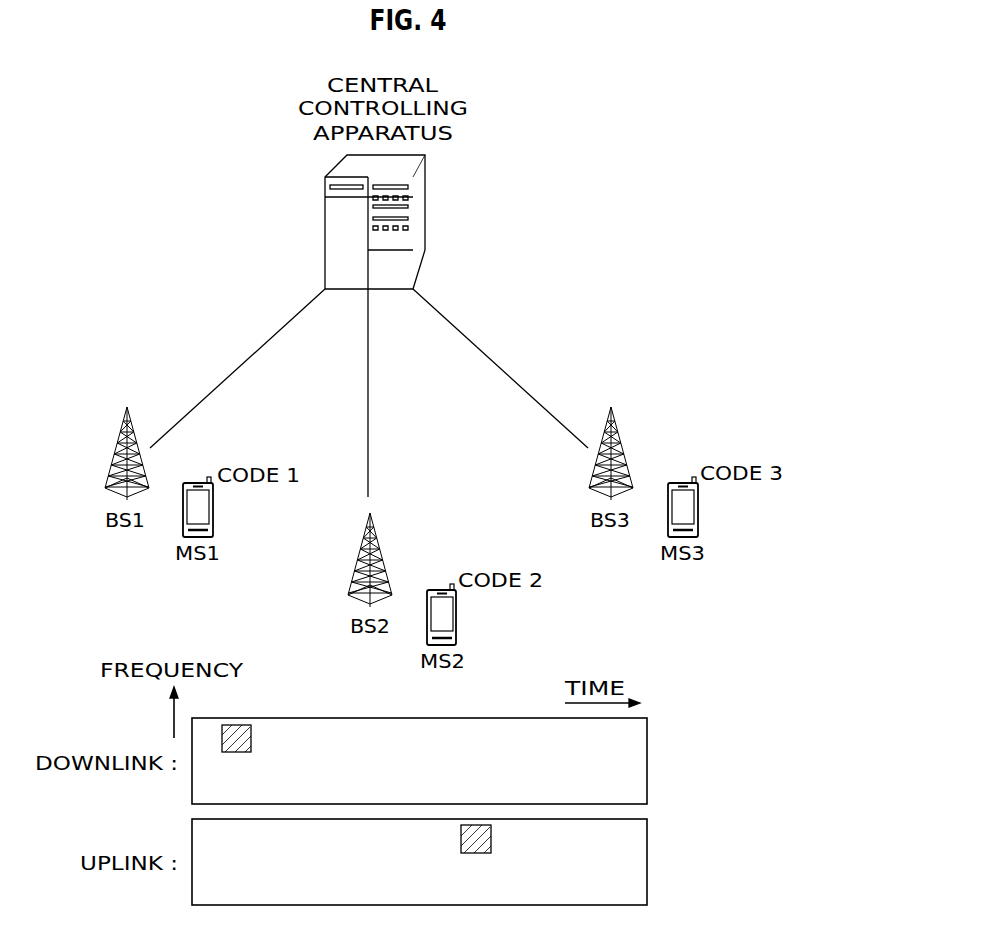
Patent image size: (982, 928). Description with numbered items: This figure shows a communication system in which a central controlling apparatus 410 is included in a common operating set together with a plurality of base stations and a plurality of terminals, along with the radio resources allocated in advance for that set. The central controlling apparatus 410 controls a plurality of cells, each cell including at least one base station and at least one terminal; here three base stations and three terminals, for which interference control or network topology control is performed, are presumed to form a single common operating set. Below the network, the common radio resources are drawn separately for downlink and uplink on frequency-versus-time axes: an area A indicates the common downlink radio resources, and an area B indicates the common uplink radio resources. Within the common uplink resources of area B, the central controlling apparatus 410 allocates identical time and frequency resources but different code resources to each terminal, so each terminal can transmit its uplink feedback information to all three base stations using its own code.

The central controlling apparatus 410 is at (325, 237).
The area indicating common downlink radio resources A is at (251, 738).
The area indicating common uplink radio resources B is at (491, 839).